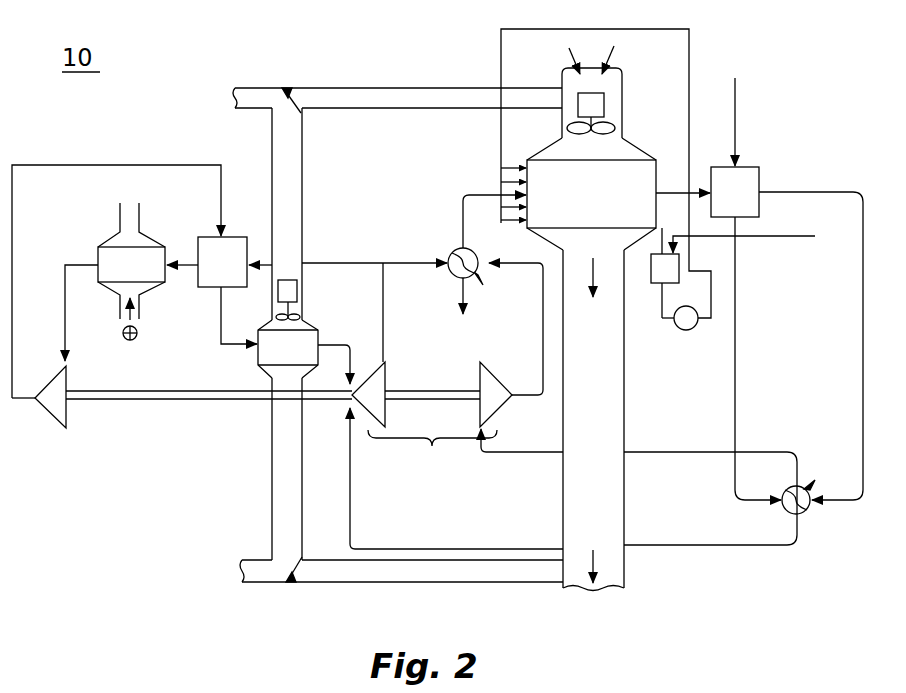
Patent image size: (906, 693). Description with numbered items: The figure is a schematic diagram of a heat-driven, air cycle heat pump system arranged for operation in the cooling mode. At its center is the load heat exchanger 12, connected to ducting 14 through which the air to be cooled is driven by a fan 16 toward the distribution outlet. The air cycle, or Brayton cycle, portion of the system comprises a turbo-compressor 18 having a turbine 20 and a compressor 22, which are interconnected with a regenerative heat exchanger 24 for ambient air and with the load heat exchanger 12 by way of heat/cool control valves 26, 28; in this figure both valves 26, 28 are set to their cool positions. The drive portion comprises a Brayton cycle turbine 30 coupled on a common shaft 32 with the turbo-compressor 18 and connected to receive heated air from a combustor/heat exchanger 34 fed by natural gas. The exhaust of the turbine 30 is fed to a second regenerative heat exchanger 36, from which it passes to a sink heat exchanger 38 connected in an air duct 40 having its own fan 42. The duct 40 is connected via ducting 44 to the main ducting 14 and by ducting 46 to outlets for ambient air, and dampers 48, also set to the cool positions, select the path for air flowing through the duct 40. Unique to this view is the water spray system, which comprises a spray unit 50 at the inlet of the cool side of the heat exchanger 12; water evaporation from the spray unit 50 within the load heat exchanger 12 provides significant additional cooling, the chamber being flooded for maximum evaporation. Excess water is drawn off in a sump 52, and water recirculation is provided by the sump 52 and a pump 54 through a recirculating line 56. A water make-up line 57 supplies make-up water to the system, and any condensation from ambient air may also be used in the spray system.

The load heat exchanger 12 is at (655, 166).
The ducting 14 is at (624, 138).
The fan 16 is at (604, 102).
The turbo-compressor 18 is at (432, 456).
The turbine 20 is at (490, 376).
The compressor 22 is at (386, 380).
The regenerative heat exchanger 24 is at (759, 167).
The heat/cool control valve 26 is at (450, 253).
The heat/cool control valve 28 is at (808, 513).
The Brayton cycle turbine 30 is at (52, 428).
The common shaft 32 is at (206, 410).
The combustor/heat exchanger 34 is at (165, 248).
The second regenerative heat exchanger 36 is at (238, 237).
The sink heat exchanger 38 is at (321, 337).
The air duct 40 is at (302, 199).
The fan 42 is at (297, 294).
The ducting 44 is at (405, 88).
The ducting 46 is at (242, 78).
The dampers 48 is at (302, 93).
The spray unit 50 is at (500, 178).
The sump 52 is at (651, 278).
The pump 54 is at (680, 329).
The recirculating line 56 is at (689, 57).
The water make-up line 57 is at (783, 234).